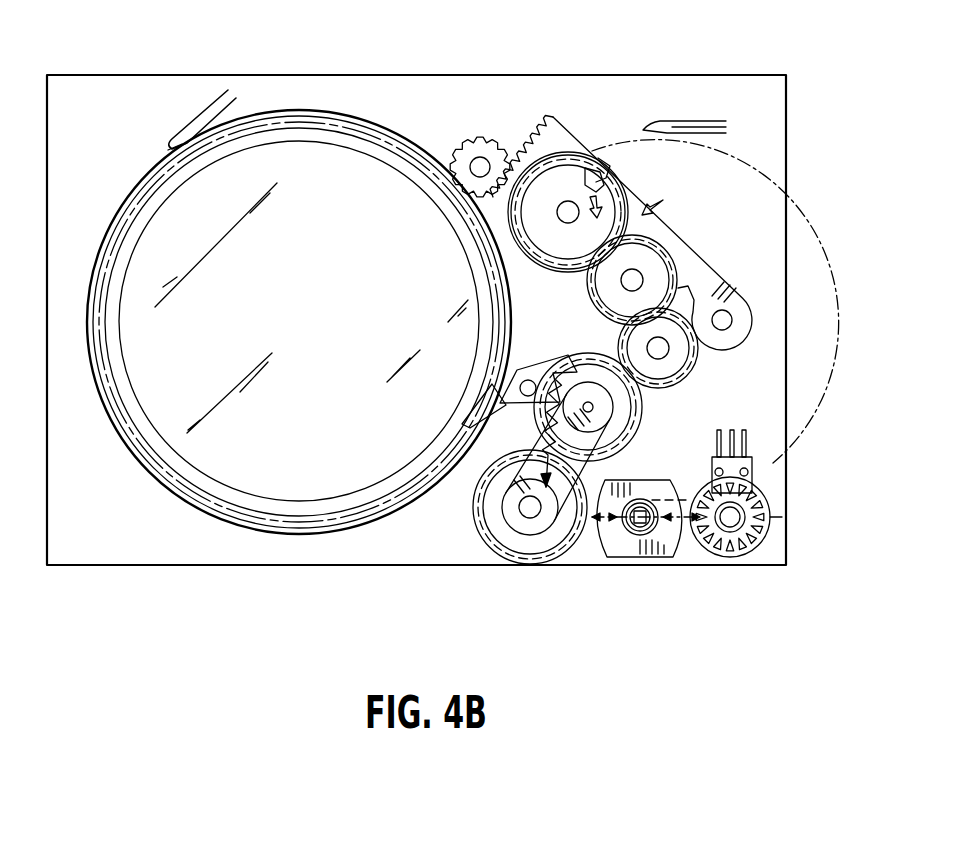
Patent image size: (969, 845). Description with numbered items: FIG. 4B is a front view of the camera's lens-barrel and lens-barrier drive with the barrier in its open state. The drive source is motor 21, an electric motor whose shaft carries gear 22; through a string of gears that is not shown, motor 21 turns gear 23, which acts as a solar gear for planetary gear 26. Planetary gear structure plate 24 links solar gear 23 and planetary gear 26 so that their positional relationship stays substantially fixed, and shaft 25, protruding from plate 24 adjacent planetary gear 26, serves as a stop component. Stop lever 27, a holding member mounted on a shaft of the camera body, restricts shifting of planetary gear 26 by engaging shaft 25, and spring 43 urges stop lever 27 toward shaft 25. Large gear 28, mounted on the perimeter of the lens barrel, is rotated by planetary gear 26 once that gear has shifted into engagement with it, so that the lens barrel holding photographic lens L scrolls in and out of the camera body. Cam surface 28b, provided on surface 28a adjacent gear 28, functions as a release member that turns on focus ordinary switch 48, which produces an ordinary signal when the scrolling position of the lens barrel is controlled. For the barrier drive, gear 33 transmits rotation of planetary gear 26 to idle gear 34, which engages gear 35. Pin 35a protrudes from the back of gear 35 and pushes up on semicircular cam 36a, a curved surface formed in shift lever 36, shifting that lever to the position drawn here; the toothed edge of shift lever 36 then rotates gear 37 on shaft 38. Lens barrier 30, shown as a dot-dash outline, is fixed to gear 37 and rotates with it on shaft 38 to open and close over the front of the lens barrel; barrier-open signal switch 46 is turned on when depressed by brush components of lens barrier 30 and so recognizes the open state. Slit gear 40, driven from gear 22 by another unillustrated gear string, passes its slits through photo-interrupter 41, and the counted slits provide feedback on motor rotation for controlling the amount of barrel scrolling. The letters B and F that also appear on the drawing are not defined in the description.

The drive source 21 is at (623, 557).
The gear 22 is at (660, 540).
The solar gear 23 is at (497, 527).
The planetary gear structure plate 24 is at (553, 545).
The shaft 25 is at (588, 402).
The planetary gear 26 is at (627, 417).
The stop lever 27 is at (556, 366).
The large gear 28 is at (143, 462).
The surface 28a is at (410, 490).
The cam surface 28b is at (478, 397).
The lens barrier 30 is at (797, 142).
The gear 33 is at (673, 355).
The idle gear 34 is at (637, 262).
The gear 35 is at (560, 187).
The pin 35a is at (596, 153).
The shift lever 36 is at (698, 273).
The semicircular cam 36a is at (597, 178).
The gear 37 is at (492, 147).
The shaft 38 is at (477, 140).
The slit gear 40 is at (770, 517).
The photo-interrupter 41 is at (707, 493).
The spring 43 is at (600, 452).
The barrier-open signal switch 46 is at (690, 122).
The focus ordinary switch 48 is at (187, 138).
The direction B is at (590, 221).
The direction F is at (661, 198).
The photographic lens L is at (263, 463).